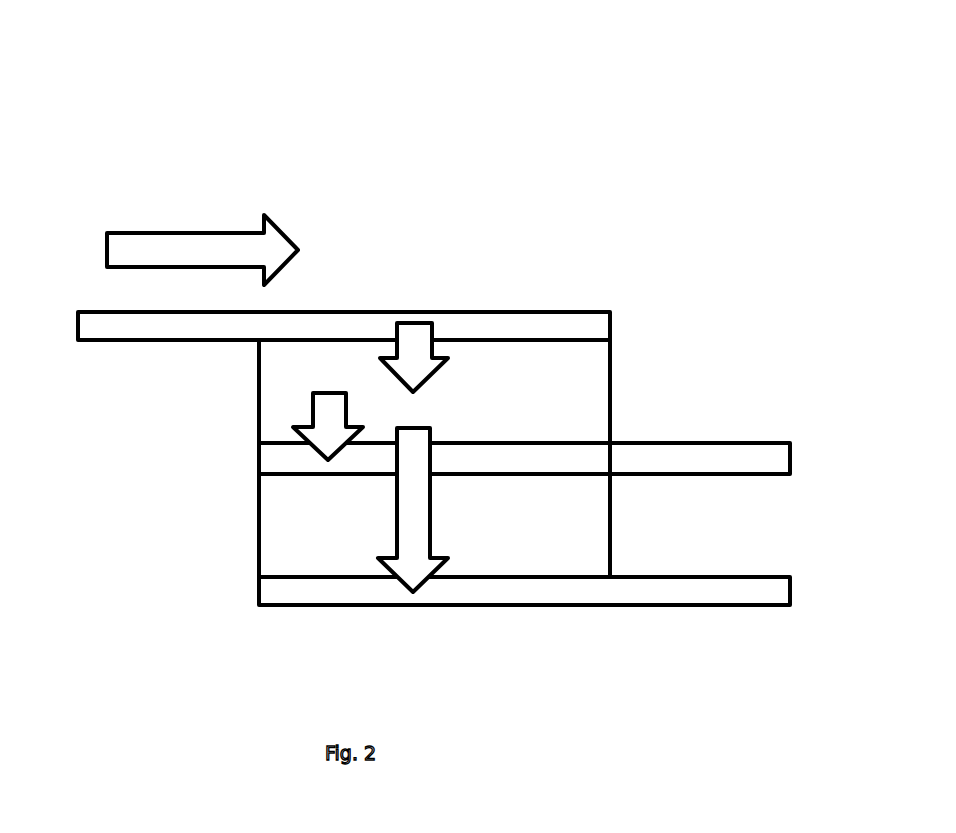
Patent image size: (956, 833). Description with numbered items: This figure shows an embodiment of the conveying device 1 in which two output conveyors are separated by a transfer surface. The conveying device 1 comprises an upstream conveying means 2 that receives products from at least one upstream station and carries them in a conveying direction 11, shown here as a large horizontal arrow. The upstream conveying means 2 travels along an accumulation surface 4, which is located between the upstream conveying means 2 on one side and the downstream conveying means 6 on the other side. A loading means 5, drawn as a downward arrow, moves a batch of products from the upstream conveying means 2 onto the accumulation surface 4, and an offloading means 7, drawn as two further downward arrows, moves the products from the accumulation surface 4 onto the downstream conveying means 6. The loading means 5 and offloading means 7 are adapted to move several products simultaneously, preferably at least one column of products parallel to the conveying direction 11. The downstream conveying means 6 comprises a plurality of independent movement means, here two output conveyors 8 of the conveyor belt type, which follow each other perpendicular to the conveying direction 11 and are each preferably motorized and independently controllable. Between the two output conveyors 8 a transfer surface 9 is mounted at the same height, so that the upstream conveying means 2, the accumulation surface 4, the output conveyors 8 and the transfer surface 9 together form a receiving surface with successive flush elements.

The conveying device 1 is at (439, 377).
The upstream conveying means 2 is at (112, 372).
The accumulation surface 4 is at (580, 392).
The loading means 5 is at (408, 352).
The downstream conveying means 6 is at (548, 436).
The offloading means 7 is at (327, 423).
The output conveyor 8 is at (743, 563).
The transfer surface 9 is at (528, 540).
The conveying direction 11 is at (135, 253).